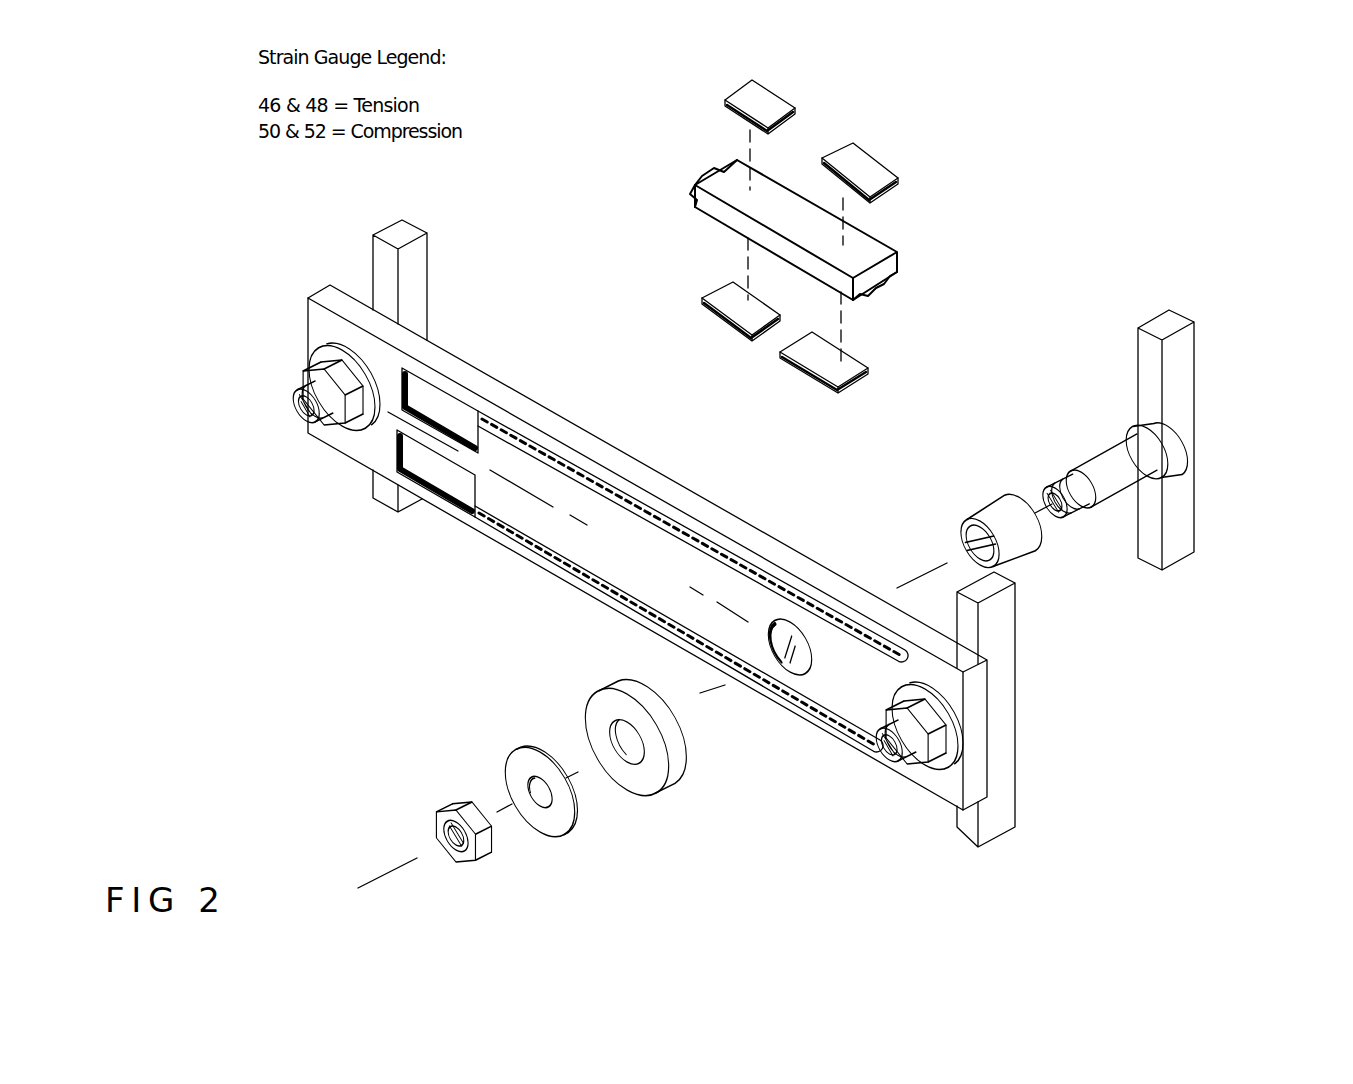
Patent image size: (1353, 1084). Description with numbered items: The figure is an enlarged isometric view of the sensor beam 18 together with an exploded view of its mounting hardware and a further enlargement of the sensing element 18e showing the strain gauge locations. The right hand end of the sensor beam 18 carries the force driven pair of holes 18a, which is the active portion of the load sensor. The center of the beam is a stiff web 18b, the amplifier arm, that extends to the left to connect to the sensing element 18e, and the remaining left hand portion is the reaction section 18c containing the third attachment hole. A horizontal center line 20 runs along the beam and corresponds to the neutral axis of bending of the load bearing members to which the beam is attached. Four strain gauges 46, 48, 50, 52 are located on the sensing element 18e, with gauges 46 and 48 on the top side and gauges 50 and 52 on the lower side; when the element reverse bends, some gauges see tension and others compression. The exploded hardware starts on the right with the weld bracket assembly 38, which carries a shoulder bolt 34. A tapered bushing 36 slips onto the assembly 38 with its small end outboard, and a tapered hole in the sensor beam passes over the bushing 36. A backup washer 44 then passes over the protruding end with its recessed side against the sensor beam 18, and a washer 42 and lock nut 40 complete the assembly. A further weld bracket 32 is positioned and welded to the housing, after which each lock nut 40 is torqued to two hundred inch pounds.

The sensor beam 18 is at (628, 456).
The force driven pair of holes 18a is at (865, 706).
The stiff web 18b is at (619, 546).
The reaction section 18c is at (347, 390).
The sensing element 18e is at (437, 413).
The horizontal center line 20 is at (681, 582).
The weld bracket 32 is at (1018, 783).
The shoulder bolt 34 is at (1095, 456).
The tapered bushing 36 is at (988, 503).
The weld bracket assembly 38 is at (1204, 352).
The lock nut 40 is at (460, 866).
The washer 42 is at (547, 837).
The backup washer 44 is at (652, 793).
The strain gauge 46 is at (727, 315).
The strain gauge 48 is at (873, 150).
The strain gauge 50 is at (768, 88).
The strain gauge 52 is at (812, 370).